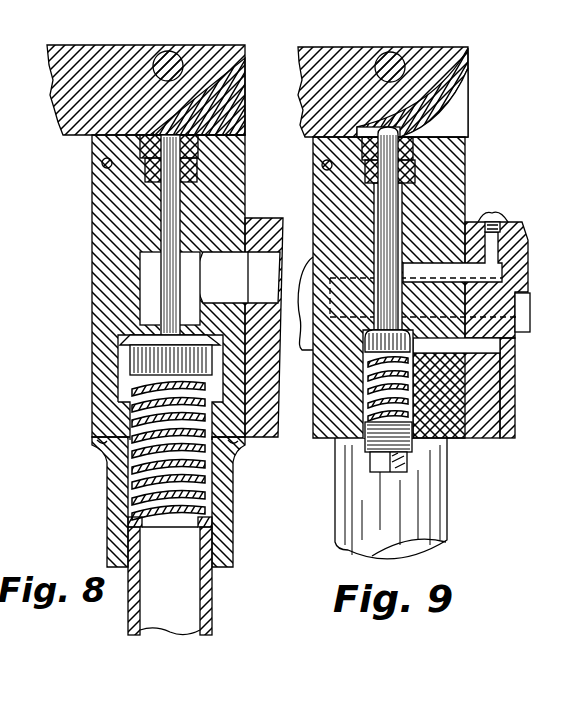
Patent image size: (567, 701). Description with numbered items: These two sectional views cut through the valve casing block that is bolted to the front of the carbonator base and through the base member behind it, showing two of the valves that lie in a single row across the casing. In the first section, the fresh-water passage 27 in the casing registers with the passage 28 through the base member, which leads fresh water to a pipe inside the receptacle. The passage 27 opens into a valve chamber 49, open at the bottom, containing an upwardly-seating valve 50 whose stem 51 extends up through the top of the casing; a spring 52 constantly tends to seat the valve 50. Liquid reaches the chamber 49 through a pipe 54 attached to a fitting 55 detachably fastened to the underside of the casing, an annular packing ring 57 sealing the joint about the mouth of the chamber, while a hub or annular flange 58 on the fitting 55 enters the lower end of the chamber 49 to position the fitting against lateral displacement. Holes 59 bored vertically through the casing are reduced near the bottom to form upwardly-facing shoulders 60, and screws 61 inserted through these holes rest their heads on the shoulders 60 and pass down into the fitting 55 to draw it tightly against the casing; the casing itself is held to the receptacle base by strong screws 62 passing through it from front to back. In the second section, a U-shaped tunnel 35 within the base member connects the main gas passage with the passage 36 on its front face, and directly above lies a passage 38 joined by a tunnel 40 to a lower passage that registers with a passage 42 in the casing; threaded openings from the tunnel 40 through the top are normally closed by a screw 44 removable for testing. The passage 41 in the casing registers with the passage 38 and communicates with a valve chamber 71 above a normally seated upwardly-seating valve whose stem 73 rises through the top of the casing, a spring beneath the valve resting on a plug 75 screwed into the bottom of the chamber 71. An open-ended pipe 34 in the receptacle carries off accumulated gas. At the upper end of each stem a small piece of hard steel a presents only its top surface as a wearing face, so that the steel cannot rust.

In FIG. 8, the holes 59 is at (124, 133).
In FIG. 8, the screws 61 is at (124, 286).
In FIG. 8, the passage 28 is at (262, 267).
In FIG. 8, the passage 27 is at (228, 265).
In FIG. 8, the valve chamber 49 is at (150, 298).
In FIG. 8, the shoulders 60 is at (111, 383).
In FIG. 8, the stem 51 is at (173, 210).
In FIG. 8, the valve 50 is at (160, 358).
In FIG. 8, the packing ring 57 is at (107, 460).
In FIG. 8, the hub or annular flange 58 is at (117, 415).
In FIG. 8, the spring 52 is at (138, 453).
In FIG. 8, the fitting 55 is at (235, 524).
In FIG. 8, the pipe 54 is at (190, 593).
In FIG. 9, the piece of hard steel a is at (425, 130).
In FIG. 9, the screws 62 is at (328, 320).
In FIG. 9, the channel or tunnel 40 is at (498, 256).
In FIG. 9, the U-shaped tunnel or channel 35 is at (510, 360).
In FIG. 9, the passage 36 is at (484, 348).
In FIG. 9, the open-ended pipe 34 is at (447, 348).
In FIG. 9, the passage 41 is at (420, 272).
In FIG. 9, the passage 38 is at (468, 272).
In FIG. 9, the valve chamber 71 is at (403, 305).
In FIG. 9, the stem 73 is at (390, 213).
In FIG. 9, the passage 42 is at (372, 352).
In FIG. 9, the screw 44 is at (380, 402).
In FIG. 9, the plug 75 is at (375, 465).